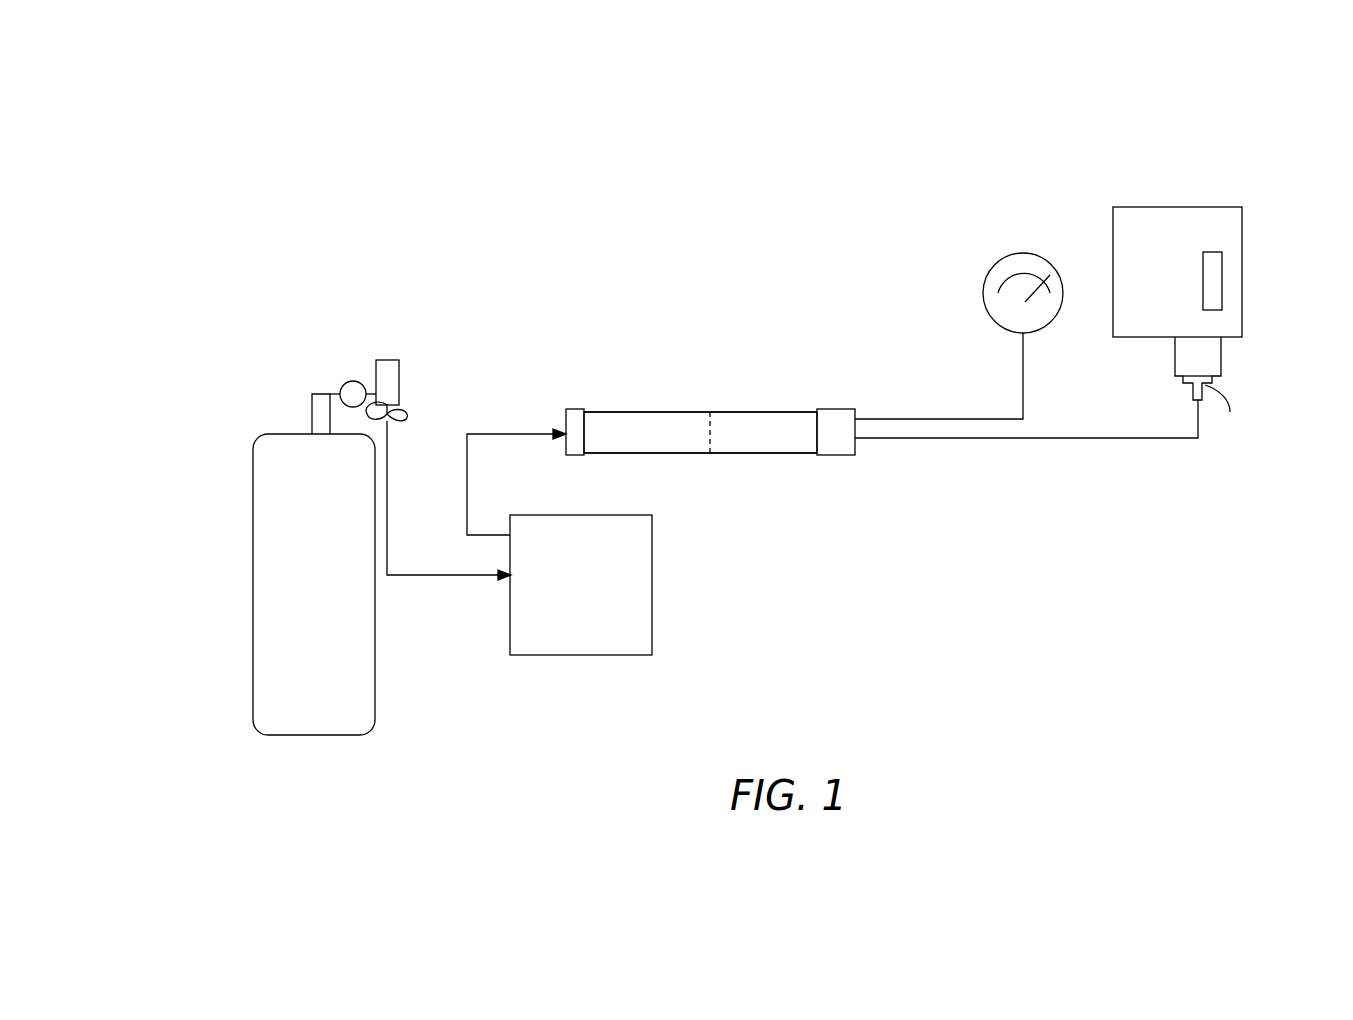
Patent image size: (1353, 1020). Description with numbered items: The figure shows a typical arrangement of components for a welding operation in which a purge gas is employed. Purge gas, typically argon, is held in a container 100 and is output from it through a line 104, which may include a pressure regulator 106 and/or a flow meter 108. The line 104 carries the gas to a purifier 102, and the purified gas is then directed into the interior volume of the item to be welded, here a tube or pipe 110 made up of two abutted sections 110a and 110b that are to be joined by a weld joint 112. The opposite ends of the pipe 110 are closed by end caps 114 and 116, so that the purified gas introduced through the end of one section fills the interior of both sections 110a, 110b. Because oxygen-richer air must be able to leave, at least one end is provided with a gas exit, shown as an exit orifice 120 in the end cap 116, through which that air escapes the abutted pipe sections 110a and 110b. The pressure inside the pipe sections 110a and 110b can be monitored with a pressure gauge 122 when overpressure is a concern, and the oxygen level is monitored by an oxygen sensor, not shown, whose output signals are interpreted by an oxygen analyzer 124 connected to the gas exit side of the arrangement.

The container 100 is at (332, 541).
The purifier 102 is at (598, 624).
The line 104 is at (388, 502).
The pressure regulator 106 is at (348, 382).
The flow meter 108 is at (392, 360).
The tube or pipe 110 is at (640, 412).
The pipe section 110a is at (660, 453).
The pipe section 110b is at (777, 453).
The weld joint 112 is at (712, 412).
The end cap 114 is at (575, 409).
The end cap 116 is at (843, 457).
The exit orifice 120 is at (856, 447).
The pressure gauge 122 is at (985, 275).
The oxygen analyzer 124 is at (1185, 207).